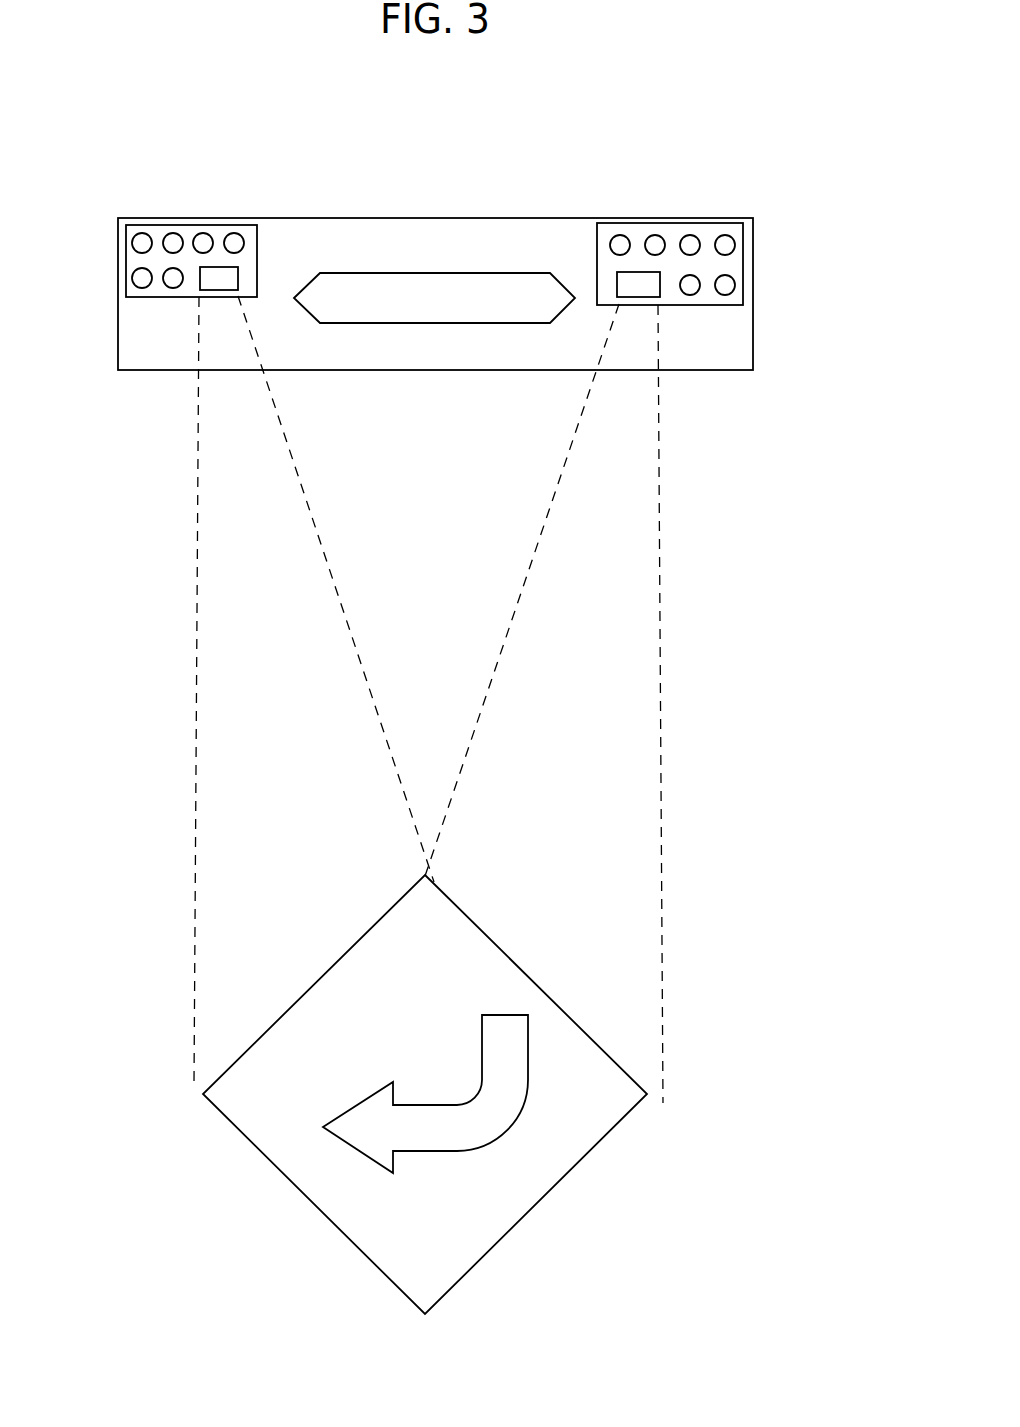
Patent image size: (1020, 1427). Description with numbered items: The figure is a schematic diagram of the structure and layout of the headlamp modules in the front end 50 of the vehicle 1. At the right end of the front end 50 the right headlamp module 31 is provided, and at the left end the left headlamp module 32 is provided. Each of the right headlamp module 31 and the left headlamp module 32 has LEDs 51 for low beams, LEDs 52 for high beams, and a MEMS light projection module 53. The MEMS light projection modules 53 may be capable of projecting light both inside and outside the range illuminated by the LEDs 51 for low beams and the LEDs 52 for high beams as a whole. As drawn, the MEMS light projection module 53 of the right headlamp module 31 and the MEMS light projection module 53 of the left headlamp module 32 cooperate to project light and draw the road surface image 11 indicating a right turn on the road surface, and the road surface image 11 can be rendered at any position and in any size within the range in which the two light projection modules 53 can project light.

The vehicle 1 is at (483, 172).
The road surface image 11 is at (268, 1101).
The right headlamp module 31 is at (197, 225).
The left headlamp module 32 is at (653, 223).
The front end 50 is at (418, 218).
The LEDs for low beams 51 is at (140, 289).
The LEDs for high beams 52 is at (146, 234).
The MEMS light projection module 53 is at (238, 278).